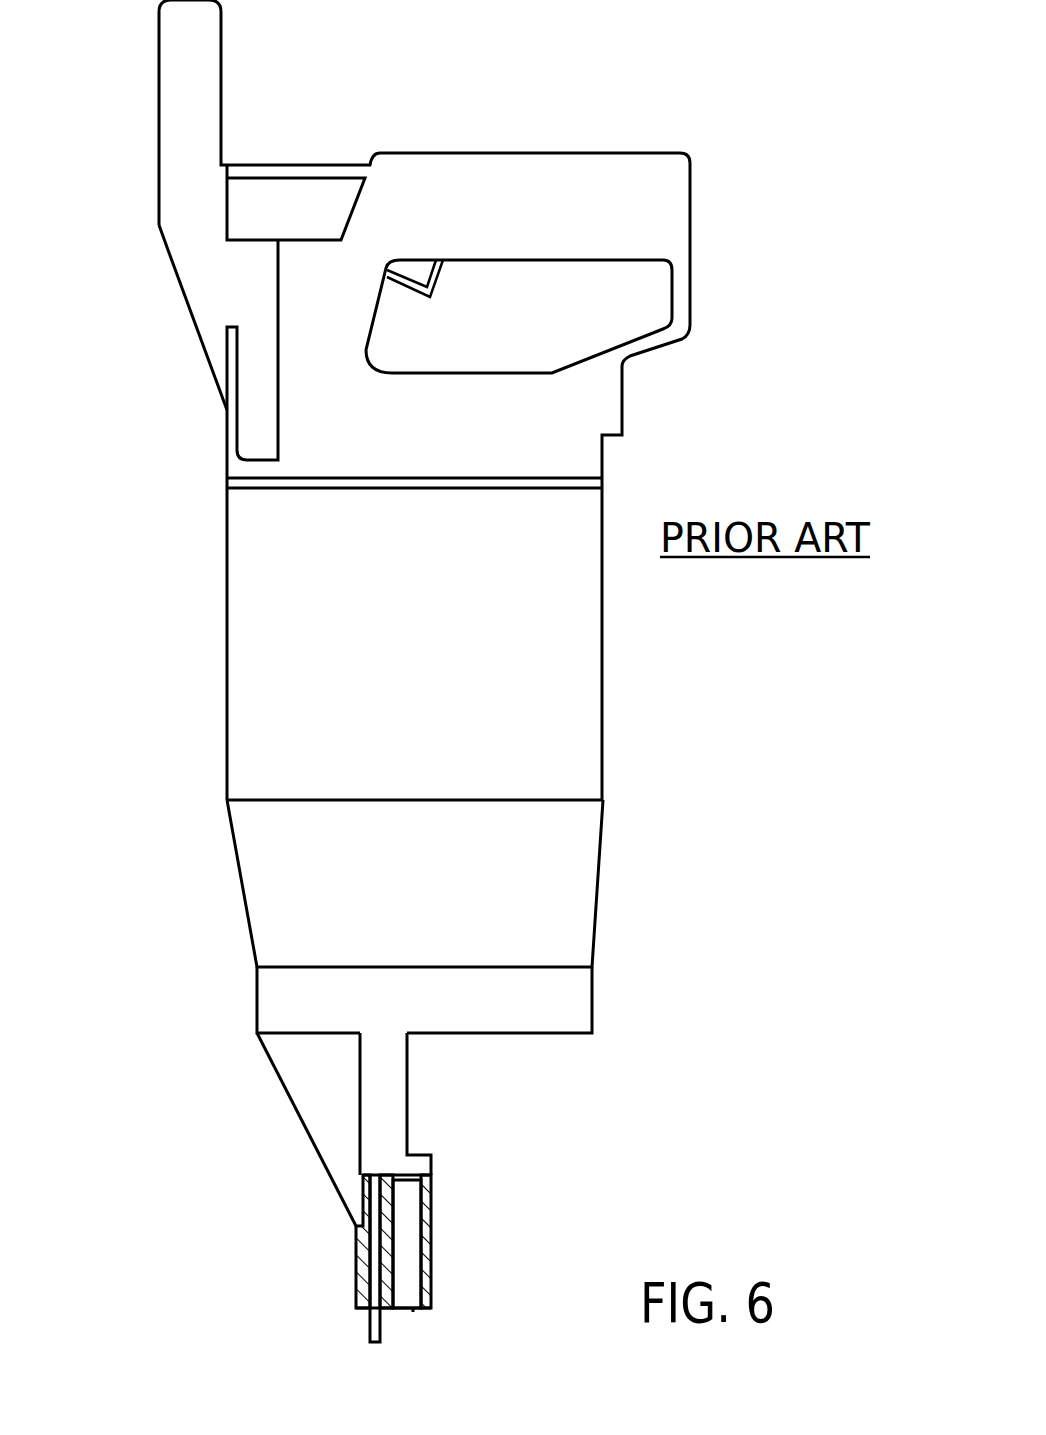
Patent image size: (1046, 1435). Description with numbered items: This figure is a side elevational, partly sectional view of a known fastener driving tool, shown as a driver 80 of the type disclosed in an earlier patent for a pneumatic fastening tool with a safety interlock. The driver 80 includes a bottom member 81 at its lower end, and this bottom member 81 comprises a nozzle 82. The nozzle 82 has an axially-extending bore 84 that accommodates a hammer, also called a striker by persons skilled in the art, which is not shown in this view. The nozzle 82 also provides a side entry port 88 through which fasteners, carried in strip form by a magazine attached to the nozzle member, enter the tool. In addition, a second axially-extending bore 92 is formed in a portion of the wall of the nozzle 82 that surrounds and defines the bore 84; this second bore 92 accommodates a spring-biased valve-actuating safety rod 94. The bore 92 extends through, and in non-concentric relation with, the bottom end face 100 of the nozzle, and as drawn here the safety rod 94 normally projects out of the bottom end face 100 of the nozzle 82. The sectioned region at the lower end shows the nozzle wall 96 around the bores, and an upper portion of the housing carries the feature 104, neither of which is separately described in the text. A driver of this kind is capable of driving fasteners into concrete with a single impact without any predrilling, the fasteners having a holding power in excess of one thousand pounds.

The driver 80 is at (190, 577).
The bottom member 81 is at (262, 1080).
The nozzle 82 is at (431, 1243).
The axially-extending bore 84 is at (420, 1211).
The side entry port 88 is at (408, 1100).
The second axially-extending bore 92 is at (377, 1175).
The safety rod 94 is at (370, 1338).
The outer sleeve wall 96 is at (431, 1278).
The bottom end face 100 is at (413, 1312).
The window tab 104 is at (440, 287).